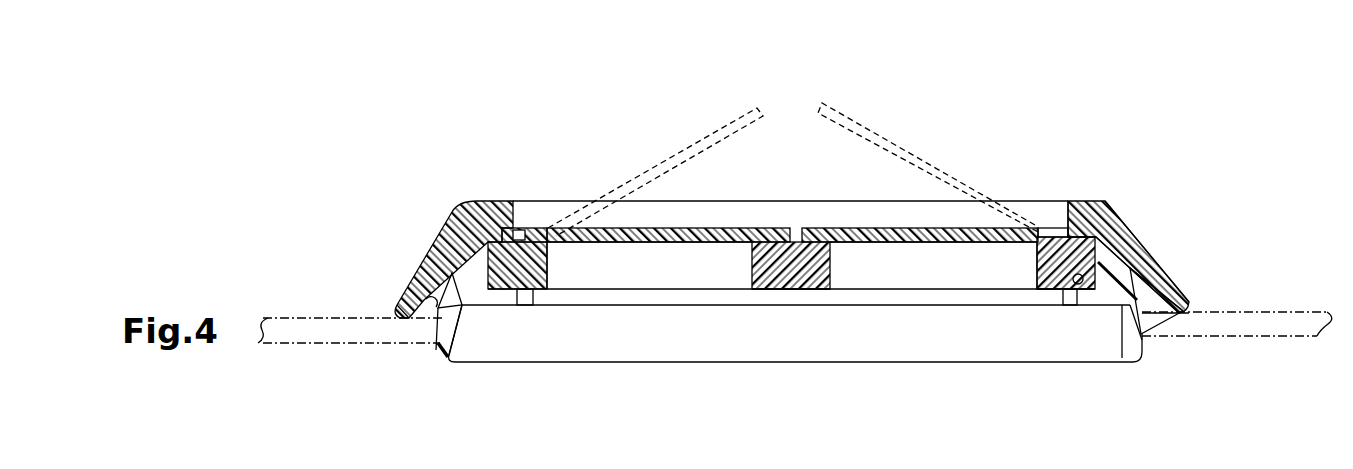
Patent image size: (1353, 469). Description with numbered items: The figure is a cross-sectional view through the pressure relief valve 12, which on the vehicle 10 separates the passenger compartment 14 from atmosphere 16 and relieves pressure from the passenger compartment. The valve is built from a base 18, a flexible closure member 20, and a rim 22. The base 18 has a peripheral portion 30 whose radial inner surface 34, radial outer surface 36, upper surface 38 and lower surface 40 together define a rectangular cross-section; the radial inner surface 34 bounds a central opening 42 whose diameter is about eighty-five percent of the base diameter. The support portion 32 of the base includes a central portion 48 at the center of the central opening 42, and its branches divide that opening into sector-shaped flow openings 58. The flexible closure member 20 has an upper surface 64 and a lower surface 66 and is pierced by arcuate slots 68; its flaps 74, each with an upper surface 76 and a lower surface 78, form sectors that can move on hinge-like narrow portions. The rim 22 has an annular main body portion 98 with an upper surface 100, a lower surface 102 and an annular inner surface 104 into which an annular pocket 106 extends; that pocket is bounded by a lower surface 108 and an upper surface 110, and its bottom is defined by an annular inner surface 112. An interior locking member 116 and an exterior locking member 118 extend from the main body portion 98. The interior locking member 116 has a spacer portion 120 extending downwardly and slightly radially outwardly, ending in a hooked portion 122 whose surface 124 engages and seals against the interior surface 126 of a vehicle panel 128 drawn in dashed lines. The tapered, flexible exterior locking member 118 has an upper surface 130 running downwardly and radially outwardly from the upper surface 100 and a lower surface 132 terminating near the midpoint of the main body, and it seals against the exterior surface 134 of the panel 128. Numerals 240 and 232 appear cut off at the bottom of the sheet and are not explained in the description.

The vehicle 10 is at (292, 305).
The pressure relief valve 12 is at (1153, 142).
The passenger compartment 14 is at (266, 421).
The atmosphere 16 is at (299, 168).
The base 18 is at (1050, 282).
The flexible closure member 20 is at (652, 262).
The rim 22 is at (1160, 237).
The peripheral portion 30 is at (1040, 272).
The support portion 32 is at (805, 300).
The radial inner surface 34 is at (548, 282).
The radial outer surface 36 is at (477, 235).
The upper surface 38 is at (519, 231).
The lower surface 40 is at (523, 292).
The central opening 42 is at (872, 285).
The central portion 48 is at (778, 272).
The flow openings 58 is at (695, 300).
The upper surface 64 is at (712, 227).
The lower surface 66 is at (598, 242).
The arcuate slots 68 is at (530, 232).
The flaps 74 is at (658, 140).
The upper surface 76 is at (852, 228).
The lower surface 78 is at (940, 237).
The main body portion 98 is at (1117, 308).
The upper surface 100 is at (1088, 200).
The lower surface 102 is at (1093, 306).
The annular inner surface 104 is at (1062, 200).
The annular pocket 106 is at (1120, 259).
The lower surface 108 is at (1074, 288).
The upper surface 110 is at (1117, 198).
The annular inner surface 112 is at (1122, 208).
The interior locking member 116 is at (1165, 326).
The exterior locking member 118 is at (1207, 297).
The spacer portion 120 is at (466, 360).
The hooked portion 122 is at (437, 347).
The surface 124 is at (440, 318).
The interior surface 126 is at (284, 347).
The panel 128 is at (258, 328).
The upper surface 130 is at (434, 292).
The lower surface 132 is at (410, 316).
The exterior surface 134 is at (347, 320).
The element 240 is at (765, 464).
The element 232 is at (840, 464).